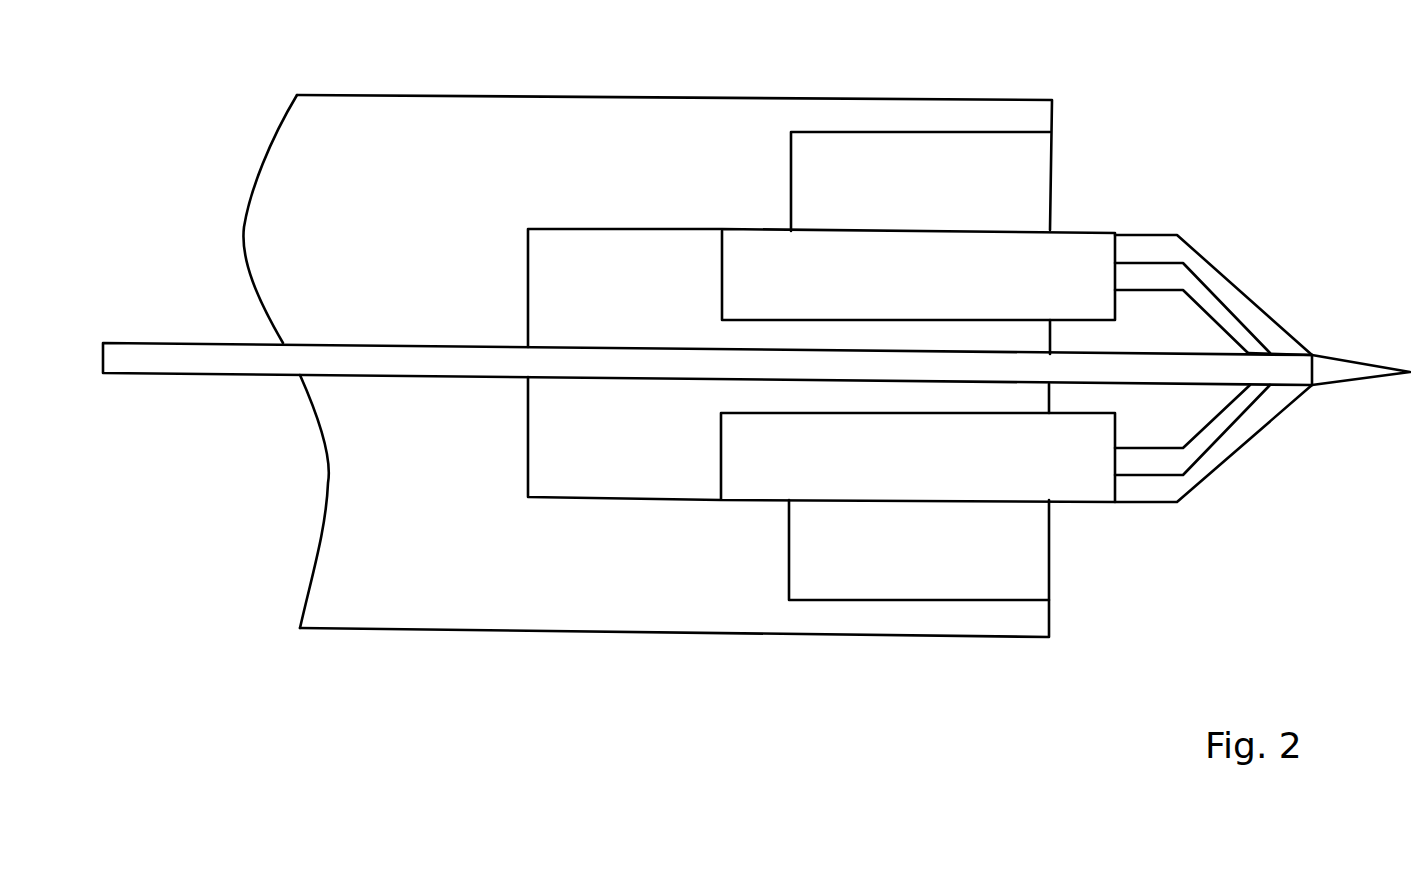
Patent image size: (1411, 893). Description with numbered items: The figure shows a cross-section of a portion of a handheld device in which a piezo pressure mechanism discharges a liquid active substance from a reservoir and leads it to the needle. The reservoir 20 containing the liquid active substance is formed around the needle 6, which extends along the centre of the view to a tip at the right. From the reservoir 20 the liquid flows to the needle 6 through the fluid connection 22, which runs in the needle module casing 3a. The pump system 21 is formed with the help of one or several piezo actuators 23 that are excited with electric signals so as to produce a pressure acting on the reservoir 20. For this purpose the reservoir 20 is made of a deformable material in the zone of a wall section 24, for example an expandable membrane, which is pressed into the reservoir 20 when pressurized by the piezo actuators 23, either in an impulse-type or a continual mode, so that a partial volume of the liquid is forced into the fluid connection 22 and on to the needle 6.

The needle module casing 3a is at (1262, 322).
The needle 6 is at (1352, 373).
The reservoir 20 is at (1087, 280).
The pump system 21 is at (802, 583).
The fluid connection 22 is at (1157, 460).
The piezo actuators 23 is at (875, 187).
The wall section 24 is at (1000, 232).